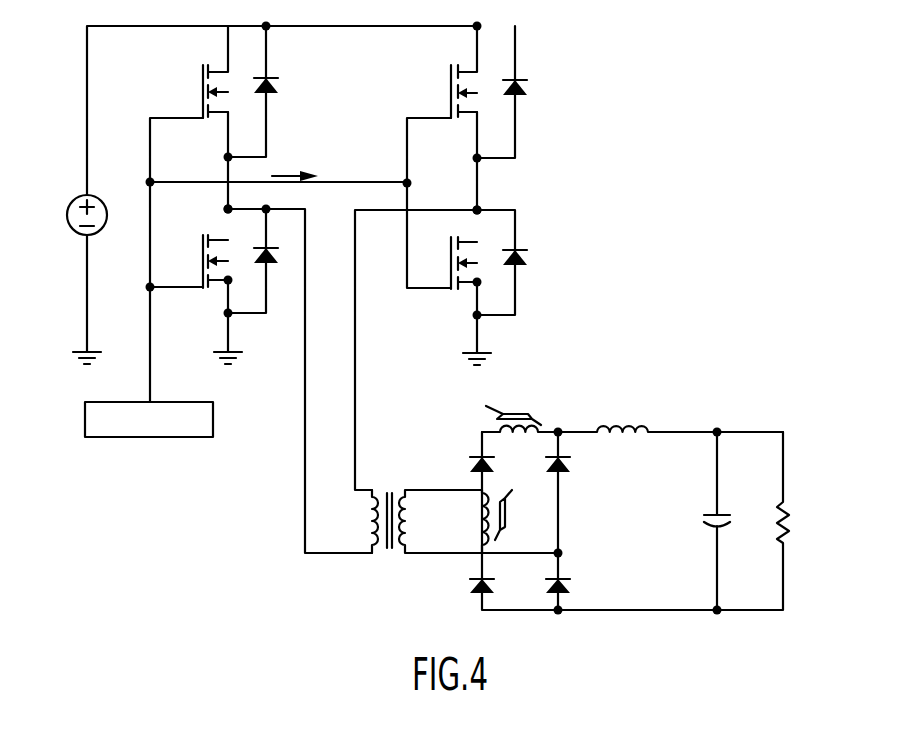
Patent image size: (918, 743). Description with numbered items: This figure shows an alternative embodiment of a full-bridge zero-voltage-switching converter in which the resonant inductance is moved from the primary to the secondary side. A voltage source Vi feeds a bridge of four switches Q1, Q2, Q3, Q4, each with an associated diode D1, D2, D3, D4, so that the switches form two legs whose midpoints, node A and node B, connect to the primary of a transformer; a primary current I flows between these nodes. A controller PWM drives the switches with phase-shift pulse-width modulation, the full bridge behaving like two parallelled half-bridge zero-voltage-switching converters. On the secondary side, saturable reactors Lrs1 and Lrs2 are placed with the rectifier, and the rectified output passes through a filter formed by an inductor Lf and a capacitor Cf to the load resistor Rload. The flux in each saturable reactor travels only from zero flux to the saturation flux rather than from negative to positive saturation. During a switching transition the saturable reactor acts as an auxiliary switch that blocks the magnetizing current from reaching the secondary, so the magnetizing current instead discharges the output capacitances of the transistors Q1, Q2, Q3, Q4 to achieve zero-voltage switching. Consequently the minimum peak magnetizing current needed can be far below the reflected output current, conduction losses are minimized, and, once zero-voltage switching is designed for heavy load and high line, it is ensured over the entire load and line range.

The switch Q1 is at (195, 72).
The switch Q2 is at (447, 260).
The switch Q3 is at (195, 254).
The switch Q4 is at (447, 72).
The diode D1 is at (279, 77).
The diode D2 is at (529, 245).
The diode D3 is at (279, 244).
The diode D4 is at (529, 78).
The voltage source Vi is at (73, 204).
The bridge node A is at (220, 201).
The bridge node B is at (484, 194).
The primary current I is at (295, 167).
The PWM controller PWM is at (149, 419).
The first saturable reactor Lrs1 is at (520, 409).
The second saturable reactor Lrs2 is at (471, 521).
The inductor Lf is at (670, 416).
The capacitor Cf is at (725, 521).
The load resistor Rload is at (708, 521).